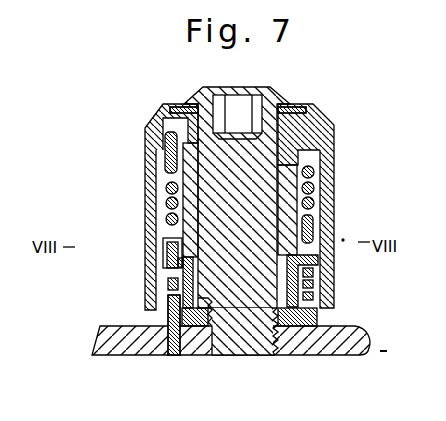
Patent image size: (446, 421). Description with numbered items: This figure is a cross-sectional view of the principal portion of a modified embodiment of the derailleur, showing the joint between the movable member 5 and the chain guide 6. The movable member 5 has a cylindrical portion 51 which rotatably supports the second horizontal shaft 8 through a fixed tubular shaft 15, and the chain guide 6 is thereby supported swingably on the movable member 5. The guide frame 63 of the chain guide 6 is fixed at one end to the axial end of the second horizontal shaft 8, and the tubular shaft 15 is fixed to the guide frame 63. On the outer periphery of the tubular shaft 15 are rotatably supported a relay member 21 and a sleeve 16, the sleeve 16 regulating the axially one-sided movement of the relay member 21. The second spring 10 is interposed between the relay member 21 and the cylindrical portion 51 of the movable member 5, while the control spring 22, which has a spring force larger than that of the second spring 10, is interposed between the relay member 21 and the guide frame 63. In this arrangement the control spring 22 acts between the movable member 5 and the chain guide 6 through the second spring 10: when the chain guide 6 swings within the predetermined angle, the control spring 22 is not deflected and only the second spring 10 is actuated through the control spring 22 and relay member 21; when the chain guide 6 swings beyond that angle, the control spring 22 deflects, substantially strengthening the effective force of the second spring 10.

The second horizontal shaft 8 is at (277, 101).
The movable member 5 is at (324, 114).
The cylindrical portion 51 is at (334, 150).
The tubular shaft 15 is at (314, 177).
The second spring 10 is at (166, 203).
The relay member 21 is at (163, 237).
The sleeve 16 is at (166, 258).
The control spring 22 is at (168, 280).
The guide frame 63 is at (137, 357).
The chain guide 6 is at (197, 357).